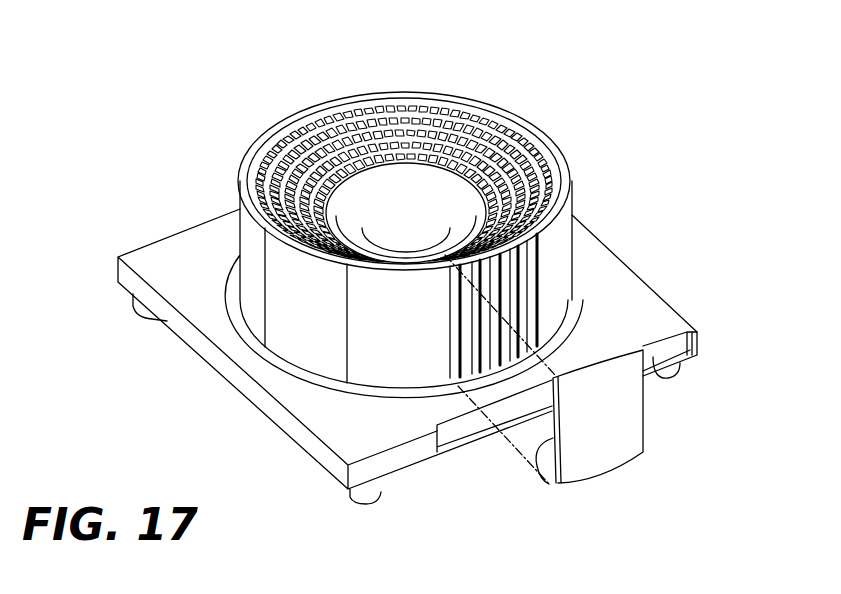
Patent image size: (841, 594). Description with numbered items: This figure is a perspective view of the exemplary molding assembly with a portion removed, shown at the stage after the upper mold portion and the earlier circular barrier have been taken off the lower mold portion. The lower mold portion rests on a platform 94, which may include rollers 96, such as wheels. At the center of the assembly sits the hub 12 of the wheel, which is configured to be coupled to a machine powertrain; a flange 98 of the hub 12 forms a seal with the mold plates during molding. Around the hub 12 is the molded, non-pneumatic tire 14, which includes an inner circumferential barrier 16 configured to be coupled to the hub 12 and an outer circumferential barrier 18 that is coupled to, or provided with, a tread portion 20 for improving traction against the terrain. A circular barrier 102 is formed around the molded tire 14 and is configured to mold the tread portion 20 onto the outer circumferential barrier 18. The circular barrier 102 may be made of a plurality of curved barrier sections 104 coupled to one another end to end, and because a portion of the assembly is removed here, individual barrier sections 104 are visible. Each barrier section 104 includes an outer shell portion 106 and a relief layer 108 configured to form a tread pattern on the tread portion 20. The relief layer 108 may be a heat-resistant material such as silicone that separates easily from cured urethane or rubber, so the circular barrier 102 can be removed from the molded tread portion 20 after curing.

The hub 12 is at (430, 203).
The tire 14 is at (394, 122).
The inner circumferential barrier 16 is at (331, 172).
The outer circumferential barrier 18 is at (330, 117).
The tread portion 20 is at (459, 387).
The platform 94 is at (703, 342).
The rollers 96 is at (676, 378).
The flange 98 is at (377, 182).
The circular barrier 102 is at (566, 245).
The curved barrier sections 104 is at (378, 373).
The outer shell portion 106 is at (597, 470).
The relief layer 108 is at (548, 485).